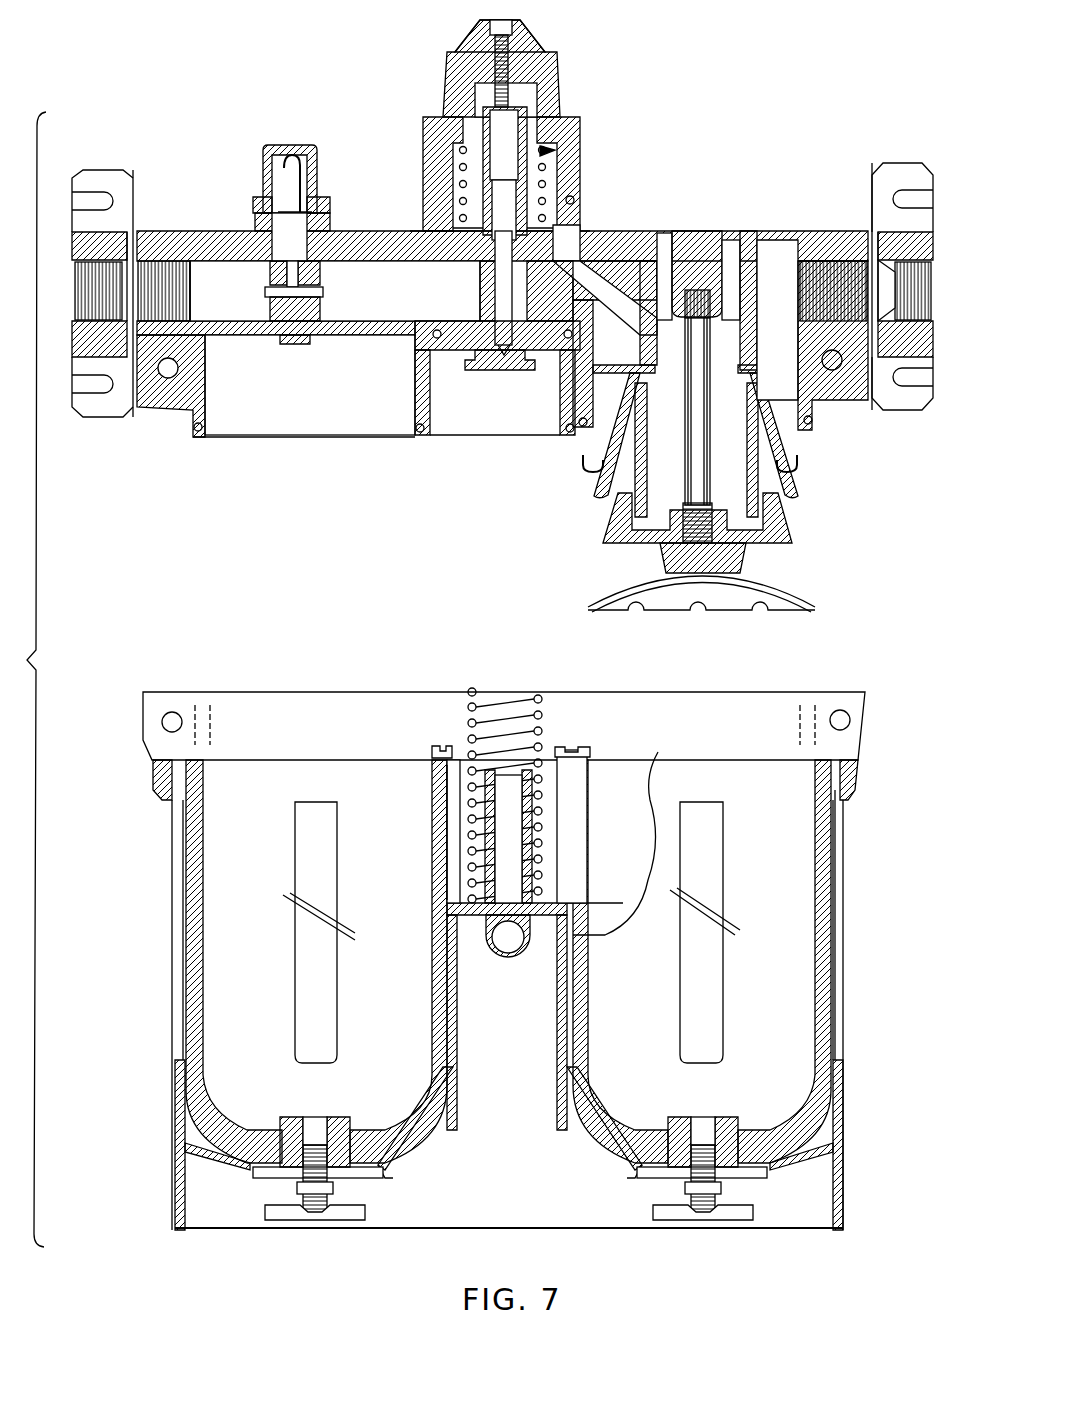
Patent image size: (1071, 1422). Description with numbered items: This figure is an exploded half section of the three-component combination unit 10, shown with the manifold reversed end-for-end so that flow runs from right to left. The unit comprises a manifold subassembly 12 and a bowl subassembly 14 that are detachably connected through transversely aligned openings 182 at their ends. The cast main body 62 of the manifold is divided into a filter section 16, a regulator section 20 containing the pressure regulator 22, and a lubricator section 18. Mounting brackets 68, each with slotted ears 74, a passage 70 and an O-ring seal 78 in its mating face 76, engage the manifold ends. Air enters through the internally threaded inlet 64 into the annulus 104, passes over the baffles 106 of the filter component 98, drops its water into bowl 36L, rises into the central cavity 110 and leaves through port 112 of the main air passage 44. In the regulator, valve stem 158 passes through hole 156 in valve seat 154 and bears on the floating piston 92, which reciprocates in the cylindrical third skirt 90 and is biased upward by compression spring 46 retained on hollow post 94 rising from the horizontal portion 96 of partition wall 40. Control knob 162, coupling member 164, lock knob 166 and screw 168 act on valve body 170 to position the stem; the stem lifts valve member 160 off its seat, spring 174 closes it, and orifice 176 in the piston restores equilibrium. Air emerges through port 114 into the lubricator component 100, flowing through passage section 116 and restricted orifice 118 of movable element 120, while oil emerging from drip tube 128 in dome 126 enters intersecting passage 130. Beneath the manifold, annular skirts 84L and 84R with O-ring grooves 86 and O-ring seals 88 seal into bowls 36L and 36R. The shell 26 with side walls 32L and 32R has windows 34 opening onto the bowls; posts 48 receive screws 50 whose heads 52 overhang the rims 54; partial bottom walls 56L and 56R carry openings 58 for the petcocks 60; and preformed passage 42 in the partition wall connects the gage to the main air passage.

The combination unit 10 is at (620, 66).
The manifold subassembly 12 is at (635, 240).
The bowl subassembly 14 is at (180, 1150).
The filter section 16 is at (732, 250).
The lubricator section 18 is at (300, 240).
The regulator section 20 is at (557, 277).
The pressure regulator 22 is at (556, 150).
The shell 26 is at (845, 825).
The left side wall 32L is at (172, 1115).
The right side wall 32R is at (845, 1110).
The windows 34 is at (180, 975).
The left bowl 36L is at (432, 860).
The right bowl 36R is at (588, 1005).
The partition wall 40 is at (560, 1000).
The preformed passage 42 is at (500, 935).
The main air passage 44 is at (565, 235).
The compression spring 46 is at (545, 830).
The upstanding posts 48 is at (585, 865).
The threaded screws 50 is at (440, 748).
The screw heads 52 is at (585, 750).
The bowl rims 54 is at (200, 760).
The left partial bottom wall 56L is at (435, 1122).
The right partial bottom wall 56R is at (585, 1122).
The opening 58 is at (385, 1178).
The petcock 60 is at (312, 1220).
The main body 62 is at (155, 240).
The inlet 64 is at (175, 261).
The mounting brackets 68 is at (108, 172).
The passage 70 is at (90, 295).
The slotted ears 74 is at (130, 178).
The bracket faces 76 is at (90, 358).
The O-ring seal 78 is at (95, 230).
The left annular skirt 84L is at (205, 400).
The right annular skirt 84R is at (592, 400).
The O-ring groove 86 is at (195, 436).
The O-ring seal 88 is at (192, 427).
The third skirt 90 is at (508, 395).
The piston 92 is at (548, 350).
The hollow post 94 is at (440, 820).
The horizontal portion 96 is at (545, 920).
The filter component 98 is at (740, 418).
The lubricator component 100 is at (330, 381).
The annulus 104 is at (750, 270).
The baffles 106 is at (790, 515).
The central cavity 110 is at (648, 345).
The port 112 is at (665, 250).
The port 114 is at (440, 272).
The passage section 116 is at (410, 255).
The restricted orifice 118 is at (318, 285).
The movable element 120 is at (322, 300).
The dome 126 is at (285, 145).
The drip tube 128 is at (315, 150).
The intersecting passage 130 is at (270, 226).
The valve seat 154 is at (574, 196).
The hole 156 is at (494, 298).
The valve stem 158 is at (535, 290).
The valve member 160 is at (560, 118).
The control knob 162 is at (548, 70).
The coupling member 164 is at (557, 90).
The lock knob 166 is at (472, 30).
The screw 168 is at (515, 18).
The valve body 170 is at (438, 128).
The spring 174 is at (455, 158).
The orifice 176 is at (490, 366).
The aligned openings 182 is at (180, 366).